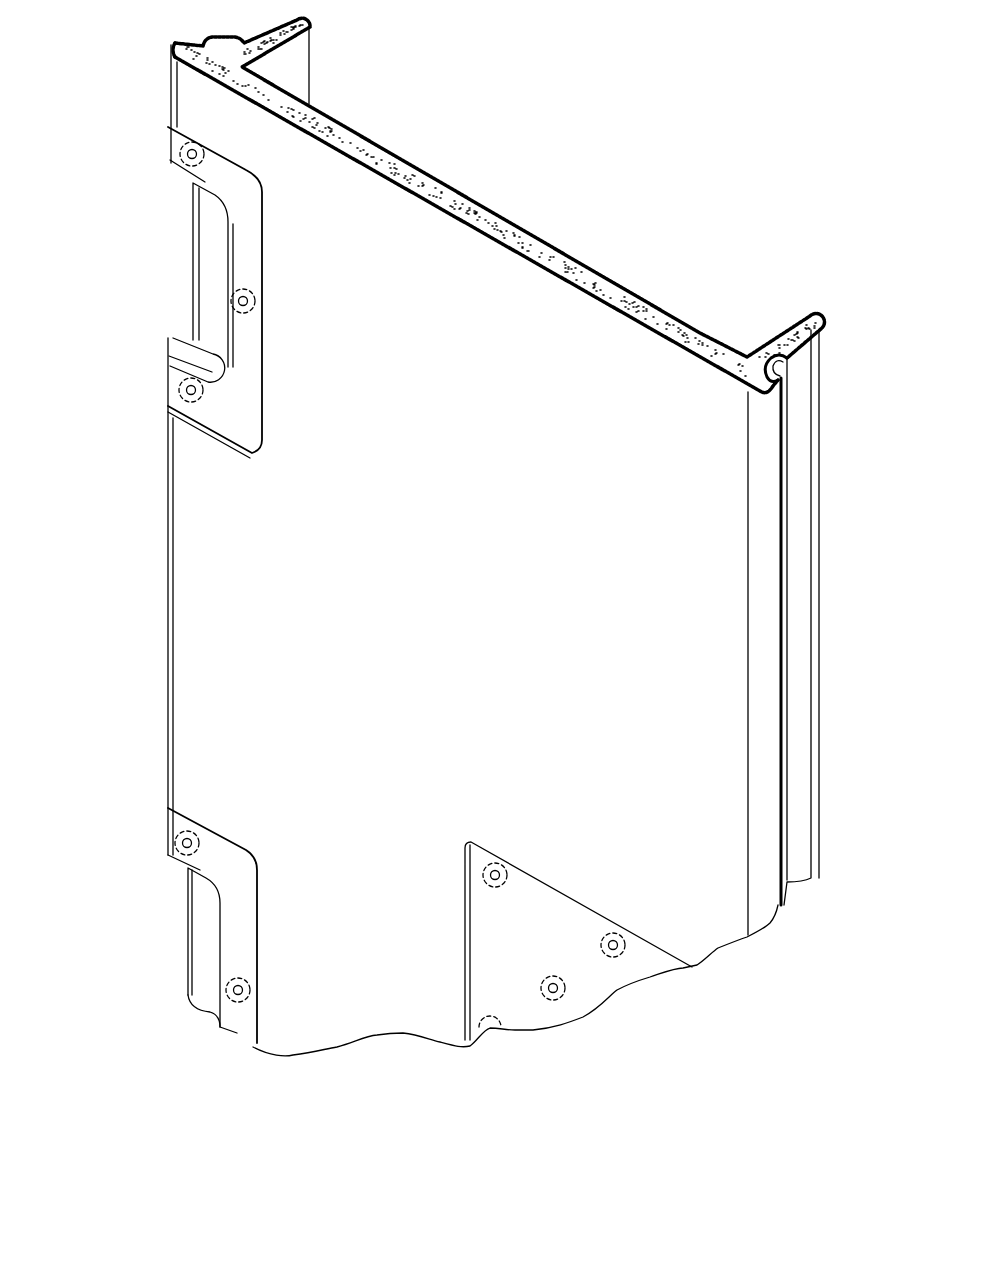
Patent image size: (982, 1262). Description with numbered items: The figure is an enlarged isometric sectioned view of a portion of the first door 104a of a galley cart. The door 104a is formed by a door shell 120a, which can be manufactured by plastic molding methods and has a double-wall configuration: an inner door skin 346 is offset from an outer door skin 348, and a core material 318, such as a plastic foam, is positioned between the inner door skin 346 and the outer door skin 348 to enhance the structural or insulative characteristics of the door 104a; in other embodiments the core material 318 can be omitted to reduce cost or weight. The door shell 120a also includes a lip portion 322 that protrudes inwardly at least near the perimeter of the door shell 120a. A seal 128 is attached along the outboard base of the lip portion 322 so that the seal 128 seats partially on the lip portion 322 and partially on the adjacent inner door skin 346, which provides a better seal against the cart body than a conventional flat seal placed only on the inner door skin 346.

The first door 104a is at (710, 202).
The door shell 120a is at (297, 577).
The core material 318 is at (386, 160).
The inner door skin 346 is at (458, 270).
The outer door skin 348 is at (430, 278).
The lip portion 322 is at (806, 355).
The seal 128 is at (783, 367).